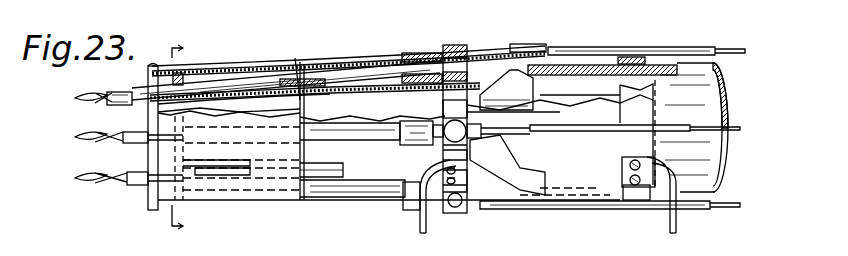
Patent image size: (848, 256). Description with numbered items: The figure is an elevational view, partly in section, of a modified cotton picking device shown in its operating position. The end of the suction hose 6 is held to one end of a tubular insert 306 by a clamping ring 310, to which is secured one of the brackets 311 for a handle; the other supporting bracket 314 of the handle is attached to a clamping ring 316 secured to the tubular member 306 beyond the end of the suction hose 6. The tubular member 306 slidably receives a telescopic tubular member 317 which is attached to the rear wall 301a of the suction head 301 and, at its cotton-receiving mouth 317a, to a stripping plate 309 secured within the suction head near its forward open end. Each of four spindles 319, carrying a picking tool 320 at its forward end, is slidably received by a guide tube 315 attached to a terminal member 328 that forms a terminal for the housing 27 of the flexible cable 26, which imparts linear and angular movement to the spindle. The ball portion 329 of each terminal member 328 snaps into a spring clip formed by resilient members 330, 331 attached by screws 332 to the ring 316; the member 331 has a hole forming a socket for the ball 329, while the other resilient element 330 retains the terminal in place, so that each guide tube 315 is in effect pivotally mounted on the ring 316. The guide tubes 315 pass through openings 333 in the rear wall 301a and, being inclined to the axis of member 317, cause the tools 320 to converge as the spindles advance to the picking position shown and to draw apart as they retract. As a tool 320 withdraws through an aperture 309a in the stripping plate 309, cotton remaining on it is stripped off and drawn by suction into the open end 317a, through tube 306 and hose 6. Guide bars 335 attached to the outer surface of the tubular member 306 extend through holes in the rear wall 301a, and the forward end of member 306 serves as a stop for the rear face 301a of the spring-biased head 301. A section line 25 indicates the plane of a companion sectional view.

The suction hose 6 is at (596, 66).
The section line 25 is at (191, 139).
The flexible cable 26 is at (590, 53).
The housing 27 is at (543, 50).
The suction head 301 is at (258, 72).
The rear wall 301a is at (312, 118).
The tubular insert 306 is at (585, 101).
The stripping plate 309 is at (215, 80).
The aperture 309a is at (170, 76).
The clamping ring 310 is at (620, 60).
The bracket 311 is at (668, 226).
The supporting bracket 314 is at (418, 226).
The guide tube 315 is at (365, 58).
The clamping ring 316 is at (470, 118).
The telescopic tubular member 317 is at (238, 108).
The cotton-receiving mouth 317a is at (160, 105).
The spindle 319 is at (128, 92).
The picking tool 320 is at (88, 95).
The terminal member 328 is at (412, 56).
The ball portion 329 is at (455, 52).
The resilient member 330 is at (445, 145).
The resilient member 331 is at (443, 105).
The screw 332 is at (462, 180).
The opening 333 is at (310, 62).
The guide bar 335 is at (316, 154).